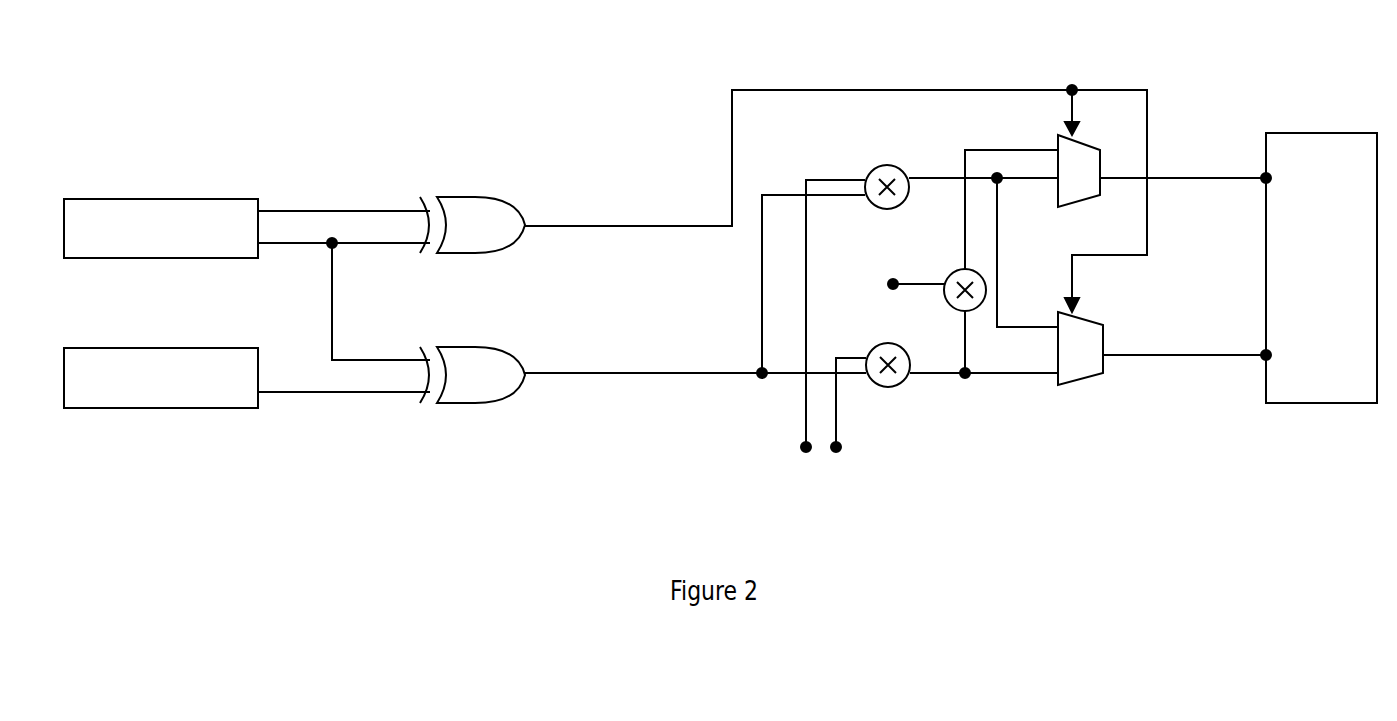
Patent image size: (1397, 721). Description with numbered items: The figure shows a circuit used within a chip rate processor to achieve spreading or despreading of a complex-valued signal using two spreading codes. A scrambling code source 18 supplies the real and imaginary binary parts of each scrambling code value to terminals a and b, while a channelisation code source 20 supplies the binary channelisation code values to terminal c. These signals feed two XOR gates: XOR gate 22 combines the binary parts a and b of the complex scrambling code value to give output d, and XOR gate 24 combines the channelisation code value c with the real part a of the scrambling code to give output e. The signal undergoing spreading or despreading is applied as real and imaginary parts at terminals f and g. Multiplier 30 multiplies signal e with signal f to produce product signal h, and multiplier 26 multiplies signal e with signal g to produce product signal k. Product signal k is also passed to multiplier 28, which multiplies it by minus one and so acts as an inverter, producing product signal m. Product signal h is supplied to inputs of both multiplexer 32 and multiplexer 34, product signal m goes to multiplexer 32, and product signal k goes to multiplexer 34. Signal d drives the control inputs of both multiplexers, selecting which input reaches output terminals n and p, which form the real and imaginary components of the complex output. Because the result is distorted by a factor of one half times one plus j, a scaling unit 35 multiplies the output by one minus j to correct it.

The scrambling code source 18 is at (185, 199).
The channelisation code source 20 is at (140, 408).
The XOR gate 22 is at (464, 198).
The XOR gate 24 is at (465, 405).
The multiplier 26 is at (888, 387).
The multiplier 28 is at (950, 308).
The multiplier 30 is at (877, 167).
The multiplexer 32 is at (1087, 207).
The multiplexer 34 is at (1078, 383).
The scaling unit 35 is at (1293, 133).